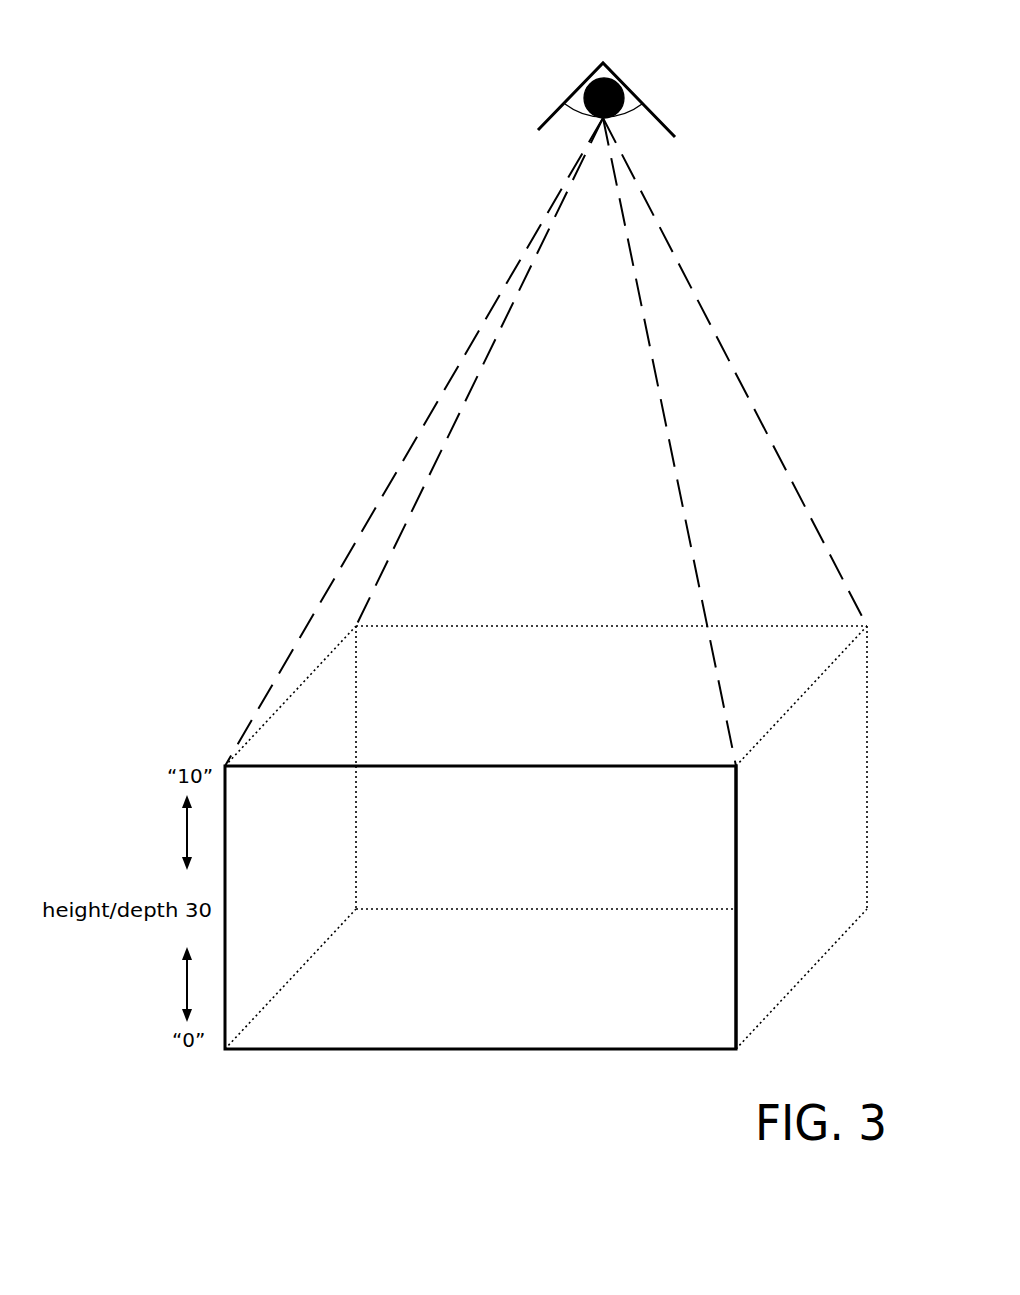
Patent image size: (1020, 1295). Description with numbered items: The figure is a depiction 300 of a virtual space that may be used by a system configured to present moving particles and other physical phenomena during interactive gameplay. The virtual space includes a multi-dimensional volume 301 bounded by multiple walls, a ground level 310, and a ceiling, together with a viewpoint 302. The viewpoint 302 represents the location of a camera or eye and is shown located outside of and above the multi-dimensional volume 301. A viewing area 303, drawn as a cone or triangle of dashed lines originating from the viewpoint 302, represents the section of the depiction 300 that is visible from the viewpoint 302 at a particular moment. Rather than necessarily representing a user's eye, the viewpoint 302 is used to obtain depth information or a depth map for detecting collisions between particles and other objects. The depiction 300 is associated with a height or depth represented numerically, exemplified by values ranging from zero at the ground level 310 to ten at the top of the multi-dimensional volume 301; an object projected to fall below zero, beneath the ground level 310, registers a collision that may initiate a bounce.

The depiction 300 is at (543, 891).
The multi-dimensional volume 301 is at (827, 989).
The viewpoint 302 is at (572, 78).
The viewing area 303 is at (538, 273).
The ground level 310 is at (803, 949).